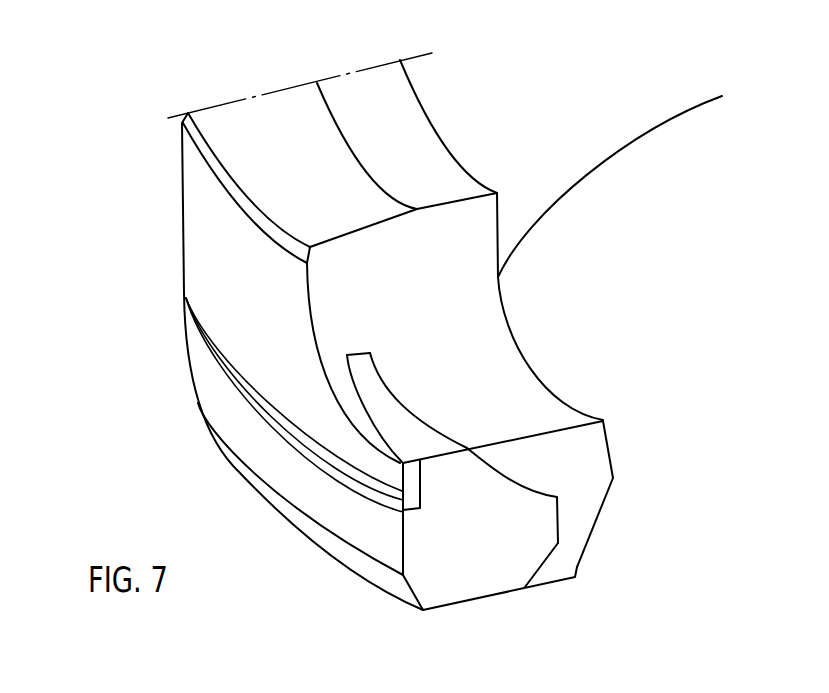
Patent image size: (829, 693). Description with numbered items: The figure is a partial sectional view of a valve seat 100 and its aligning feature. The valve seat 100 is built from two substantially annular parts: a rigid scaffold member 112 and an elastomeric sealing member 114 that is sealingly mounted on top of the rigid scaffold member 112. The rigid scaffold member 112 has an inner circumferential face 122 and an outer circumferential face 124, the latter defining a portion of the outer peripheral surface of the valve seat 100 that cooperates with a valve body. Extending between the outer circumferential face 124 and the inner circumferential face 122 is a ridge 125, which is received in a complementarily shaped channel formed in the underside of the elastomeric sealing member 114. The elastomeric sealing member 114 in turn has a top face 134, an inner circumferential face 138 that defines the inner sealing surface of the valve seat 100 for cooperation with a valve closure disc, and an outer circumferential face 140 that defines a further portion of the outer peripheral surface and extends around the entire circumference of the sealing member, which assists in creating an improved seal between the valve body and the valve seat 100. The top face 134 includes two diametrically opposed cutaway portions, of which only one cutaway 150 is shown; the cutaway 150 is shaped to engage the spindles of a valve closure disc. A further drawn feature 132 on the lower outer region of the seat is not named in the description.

The valve seat 100 is at (165, 158).
The top face 134 is at (245, 137).
The outer circumferential face 140 is at (213, 223).
The outer circumferential face 124 is at (203, 367).
The ridge 125 is at (370, 373).
The outer surface 132 is at (366, 564).
The rigid scaffold member 112 is at (492, 544).
The inner circumferential face 138 is at (608, 449).
The cutaway portion 150 is at (485, 327).
The elastomeric sealing member 114 is at (537, 460).
The inner circumferential face 122 is at (552, 538).